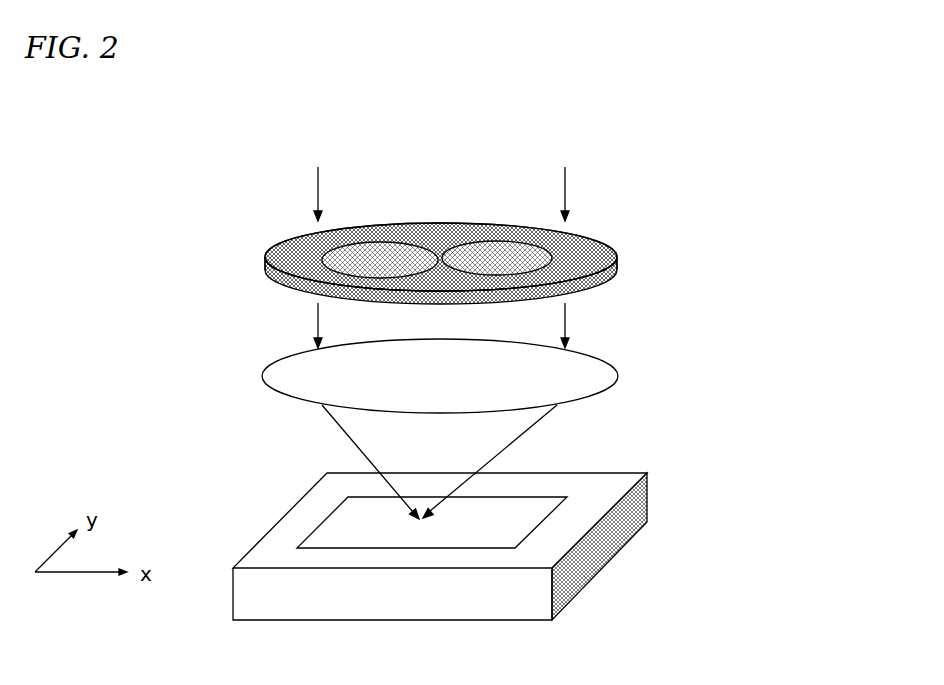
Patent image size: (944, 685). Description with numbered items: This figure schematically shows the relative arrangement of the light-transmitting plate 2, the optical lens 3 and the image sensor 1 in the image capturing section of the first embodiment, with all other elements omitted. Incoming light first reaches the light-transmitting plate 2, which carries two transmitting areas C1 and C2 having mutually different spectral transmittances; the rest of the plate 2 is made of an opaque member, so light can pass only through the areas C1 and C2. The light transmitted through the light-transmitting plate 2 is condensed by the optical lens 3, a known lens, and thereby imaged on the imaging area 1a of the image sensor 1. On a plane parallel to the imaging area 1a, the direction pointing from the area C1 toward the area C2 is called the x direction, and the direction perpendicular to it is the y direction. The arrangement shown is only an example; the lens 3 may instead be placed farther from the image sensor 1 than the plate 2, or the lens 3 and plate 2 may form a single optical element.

The image sensor 1 is at (491, 513).
The imaging area 1a is at (395, 503).
The light-transmitting plate 2 is at (486, 199).
The optical lens 3 is at (489, 338).
The transmitting area C1 is at (380, 186).
The transmitting area C2 is at (497, 185).